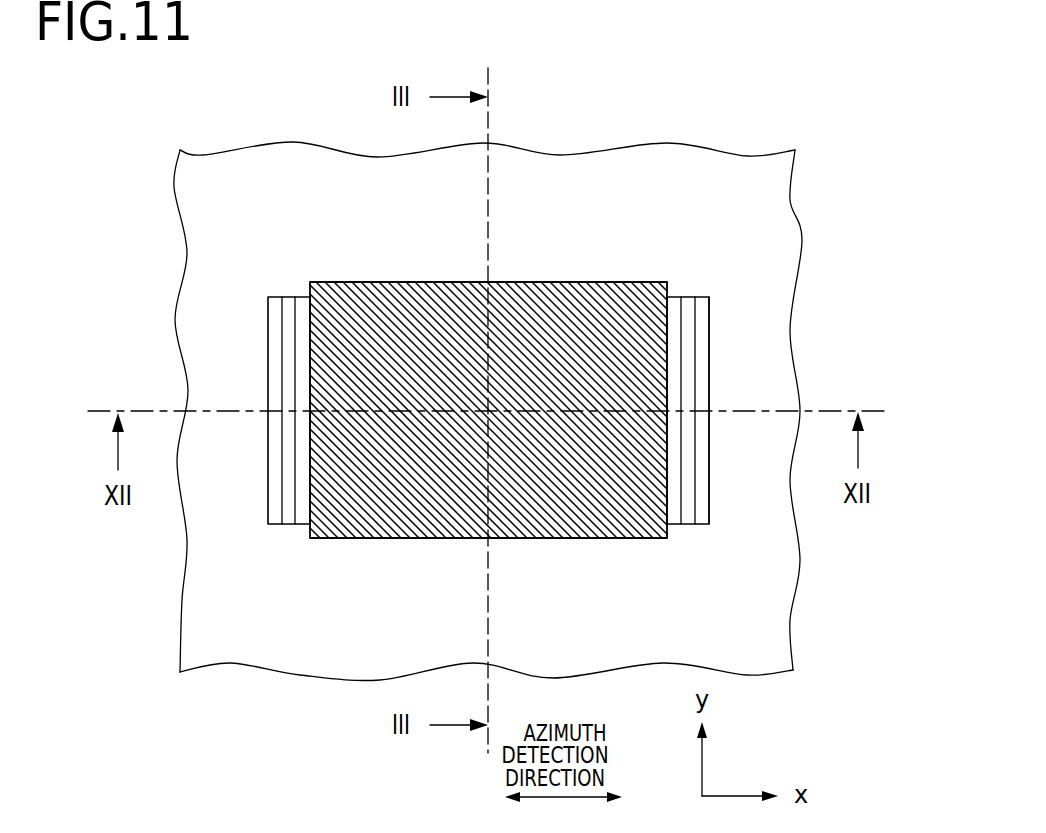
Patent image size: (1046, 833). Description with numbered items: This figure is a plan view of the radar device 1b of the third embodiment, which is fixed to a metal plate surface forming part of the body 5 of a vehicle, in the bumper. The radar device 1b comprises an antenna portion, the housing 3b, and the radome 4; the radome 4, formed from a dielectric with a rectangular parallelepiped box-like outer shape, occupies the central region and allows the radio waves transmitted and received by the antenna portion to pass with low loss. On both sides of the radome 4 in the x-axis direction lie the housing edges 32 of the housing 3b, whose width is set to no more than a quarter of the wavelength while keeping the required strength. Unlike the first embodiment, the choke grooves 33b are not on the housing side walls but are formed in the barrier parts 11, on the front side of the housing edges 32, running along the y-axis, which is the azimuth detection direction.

The radar device 1b is at (710, 62).
The body 5 is at (245, 185).
The radome 4 is at (407, 320).
The barrier parts 11 is at (488, 406).
The housing 3b is at (710, 308).
The housing edge 32 is at (268, 347).
The choke grooves 33b is at (288, 526).